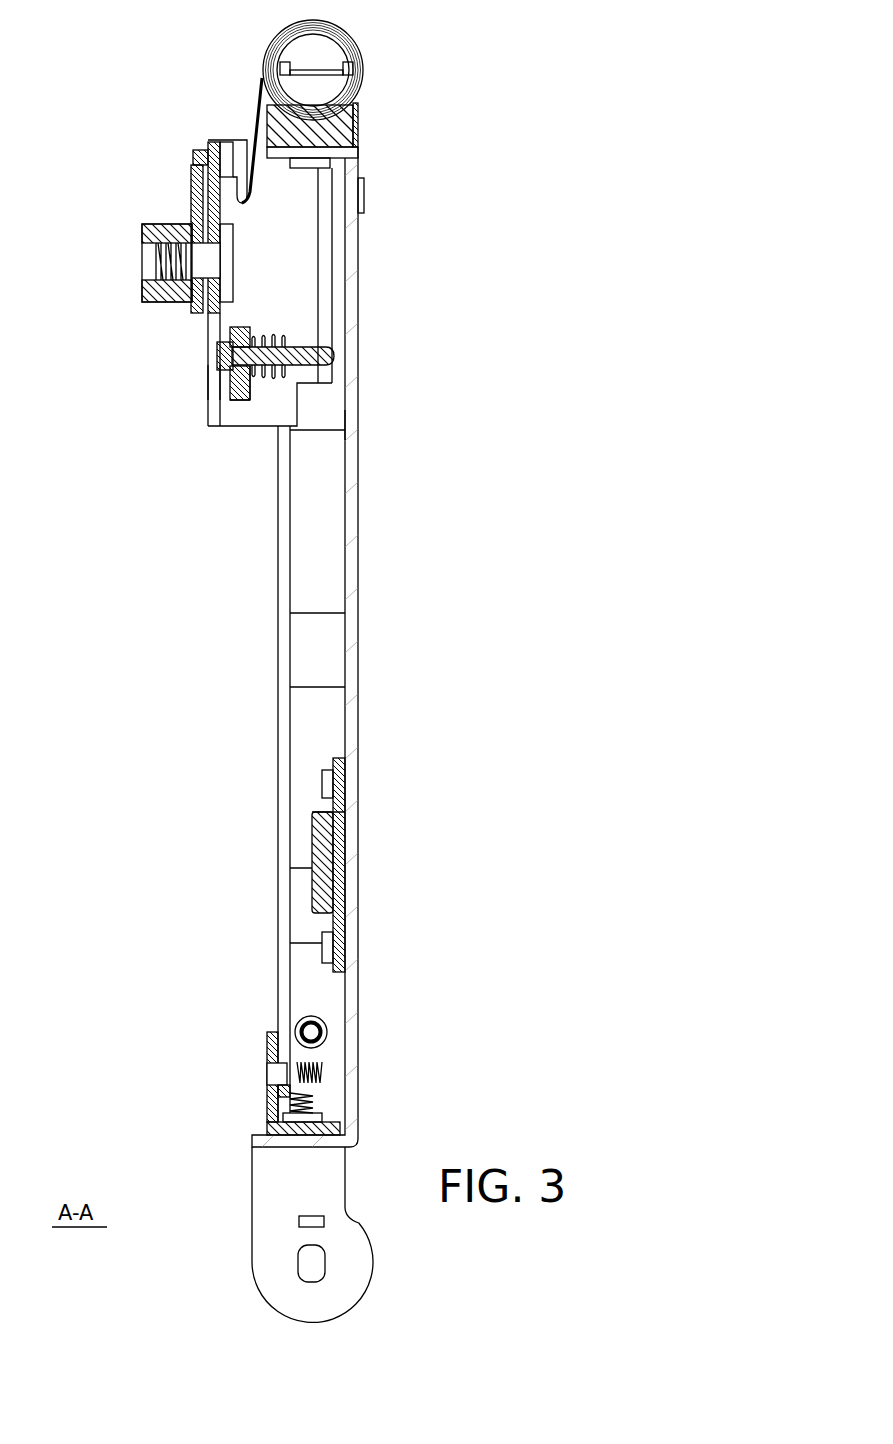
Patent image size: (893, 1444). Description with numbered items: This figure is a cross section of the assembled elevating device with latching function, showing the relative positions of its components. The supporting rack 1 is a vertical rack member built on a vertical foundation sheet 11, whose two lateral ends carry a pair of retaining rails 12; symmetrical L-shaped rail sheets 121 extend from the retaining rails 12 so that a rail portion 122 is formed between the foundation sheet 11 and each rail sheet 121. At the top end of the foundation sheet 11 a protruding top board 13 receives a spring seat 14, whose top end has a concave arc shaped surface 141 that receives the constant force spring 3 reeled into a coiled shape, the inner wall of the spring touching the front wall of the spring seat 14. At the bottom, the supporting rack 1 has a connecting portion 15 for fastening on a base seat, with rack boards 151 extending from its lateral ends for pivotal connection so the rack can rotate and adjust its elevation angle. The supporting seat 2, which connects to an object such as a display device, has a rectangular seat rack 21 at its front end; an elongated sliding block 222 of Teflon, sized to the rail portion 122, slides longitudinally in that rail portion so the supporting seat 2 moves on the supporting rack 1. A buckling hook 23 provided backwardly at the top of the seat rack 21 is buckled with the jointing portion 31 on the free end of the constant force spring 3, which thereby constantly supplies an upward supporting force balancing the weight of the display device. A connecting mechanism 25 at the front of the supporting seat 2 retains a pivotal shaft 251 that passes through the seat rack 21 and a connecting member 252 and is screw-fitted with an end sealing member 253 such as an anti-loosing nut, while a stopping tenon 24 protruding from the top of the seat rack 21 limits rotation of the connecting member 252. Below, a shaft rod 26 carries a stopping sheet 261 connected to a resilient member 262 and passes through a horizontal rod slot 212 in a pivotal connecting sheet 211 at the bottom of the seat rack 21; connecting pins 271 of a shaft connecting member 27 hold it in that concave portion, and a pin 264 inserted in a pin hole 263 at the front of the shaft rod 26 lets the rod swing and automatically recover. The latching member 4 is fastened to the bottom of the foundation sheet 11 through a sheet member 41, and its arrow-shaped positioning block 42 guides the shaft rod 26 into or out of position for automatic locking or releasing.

The supporting rack 1 is at (350, 326).
The foundation sheet 11 is at (350, 422).
The retaining rails 12 is at (285, 512).
The rail sheets 121 is at (285, 597).
The rail portion 122 is at (322, 495).
The top board 13 is at (303, 158).
The spring seat 14 is at (336, 138).
The concave arc shaped surface 141 is at (356, 126).
The connecting portion 15 is at (330, 1110).
The rack boards 151 is at (268, 1259).
The supporting seat 2 is at (242, 186).
The seat rack 21 is at (226, 178).
The pivotal connecting sheet 211 is at (215, 322).
The rod slot 212 is at (234, 390).
The sliding block 222 is at (338, 386).
The buckling hook 23 is at (243, 178).
The stopping tenon 24 is at (200, 150).
The connecting mechanism 25 is at (242, 223).
The pivotal shaft 251 is at (233, 268).
The connecting member 252 is at (192, 170).
The end sealing member 253 is at (145, 232).
The shaft rod 26 is at (332, 354).
The stopping sheet 261 is at (272, 338).
The resilient member 262 is at (268, 395).
The pin hole 263 is at (212, 352).
The pin 264 is at (225, 342).
The shaft connecting member 27 is at (212, 377).
The connecting pins 271 is at (242, 400).
The constant force spring 3 is at (348, 35).
The jointing portion 31 is at (250, 200).
The latching member 4 is at (340, 797).
The sheet member 41 is at (338, 942).
The arrow-shaped positioning block 42 is at (318, 850).